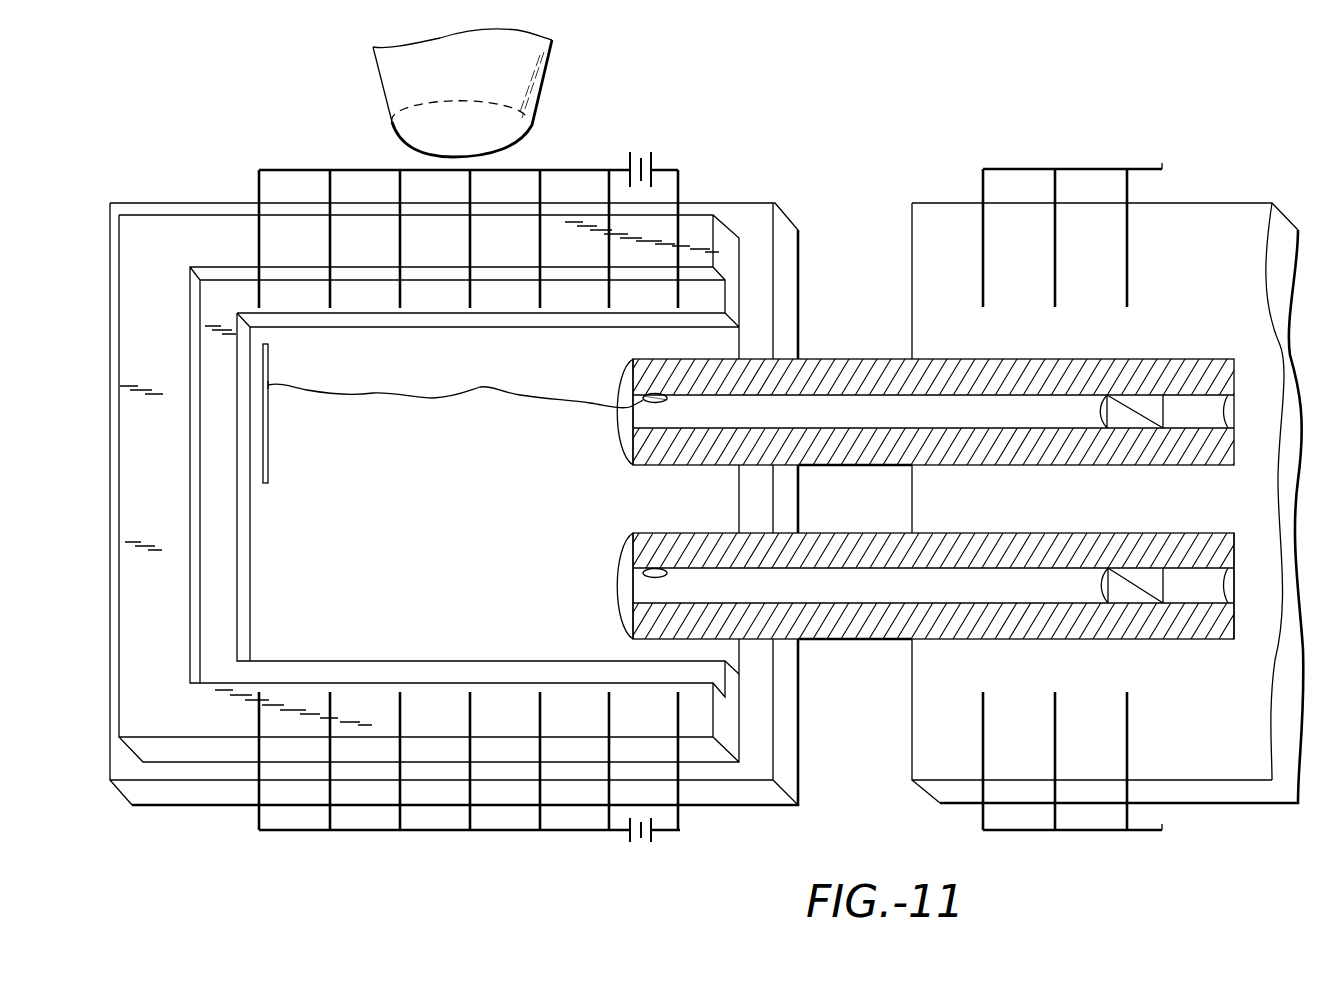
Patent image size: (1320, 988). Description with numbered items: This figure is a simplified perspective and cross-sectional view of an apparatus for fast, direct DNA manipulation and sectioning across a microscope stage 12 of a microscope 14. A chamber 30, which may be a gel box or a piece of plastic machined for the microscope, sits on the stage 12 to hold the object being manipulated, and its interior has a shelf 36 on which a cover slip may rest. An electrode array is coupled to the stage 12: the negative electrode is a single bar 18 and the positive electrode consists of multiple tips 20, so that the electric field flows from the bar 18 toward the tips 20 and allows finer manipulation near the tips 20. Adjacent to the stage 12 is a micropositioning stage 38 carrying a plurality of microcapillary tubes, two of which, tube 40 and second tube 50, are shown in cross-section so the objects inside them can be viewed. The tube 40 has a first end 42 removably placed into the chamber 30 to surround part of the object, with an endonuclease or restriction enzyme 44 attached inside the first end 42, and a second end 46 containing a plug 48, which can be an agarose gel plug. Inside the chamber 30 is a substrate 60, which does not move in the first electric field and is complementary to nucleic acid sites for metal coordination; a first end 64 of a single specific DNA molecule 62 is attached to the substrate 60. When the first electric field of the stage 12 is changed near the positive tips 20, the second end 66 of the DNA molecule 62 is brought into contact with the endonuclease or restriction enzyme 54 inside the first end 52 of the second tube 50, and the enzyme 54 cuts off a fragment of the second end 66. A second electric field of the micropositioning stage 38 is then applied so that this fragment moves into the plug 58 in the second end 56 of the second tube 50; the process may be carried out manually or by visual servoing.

The microscope stage 12 is at (133, 208).
The microscope 14 is at (522, 67).
The negative electrode bar 18 is at (257, 168).
The positive electrode tips 20 is at (679, 170).
The chamber 30 is at (178, 234).
The shelf 36 is at (421, 309).
The micropositioning stage 38 is at (1103, 237).
The tube 40 is at (857, 453).
The first end 42 is at (625, 366).
The endonuclease or restriction enzyme 44 is at (650, 396).
The second end 46 is at (1218, 358).
The plug 48 is at (1120, 393).
The second tube 50 is at (693, 627).
The first end 52 is at (623, 542).
The endonuclease or restriction enzyme 54 is at (647, 577).
The second end 56 is at (1212, 532).
The plug 58 is at (1138, 580).
The substrate 60 is at (270, 455).
The specific DNA molecule 62 is at (437, 398).
The first end 64 is at (270, 384).
The second end 66 is at (650, 403).